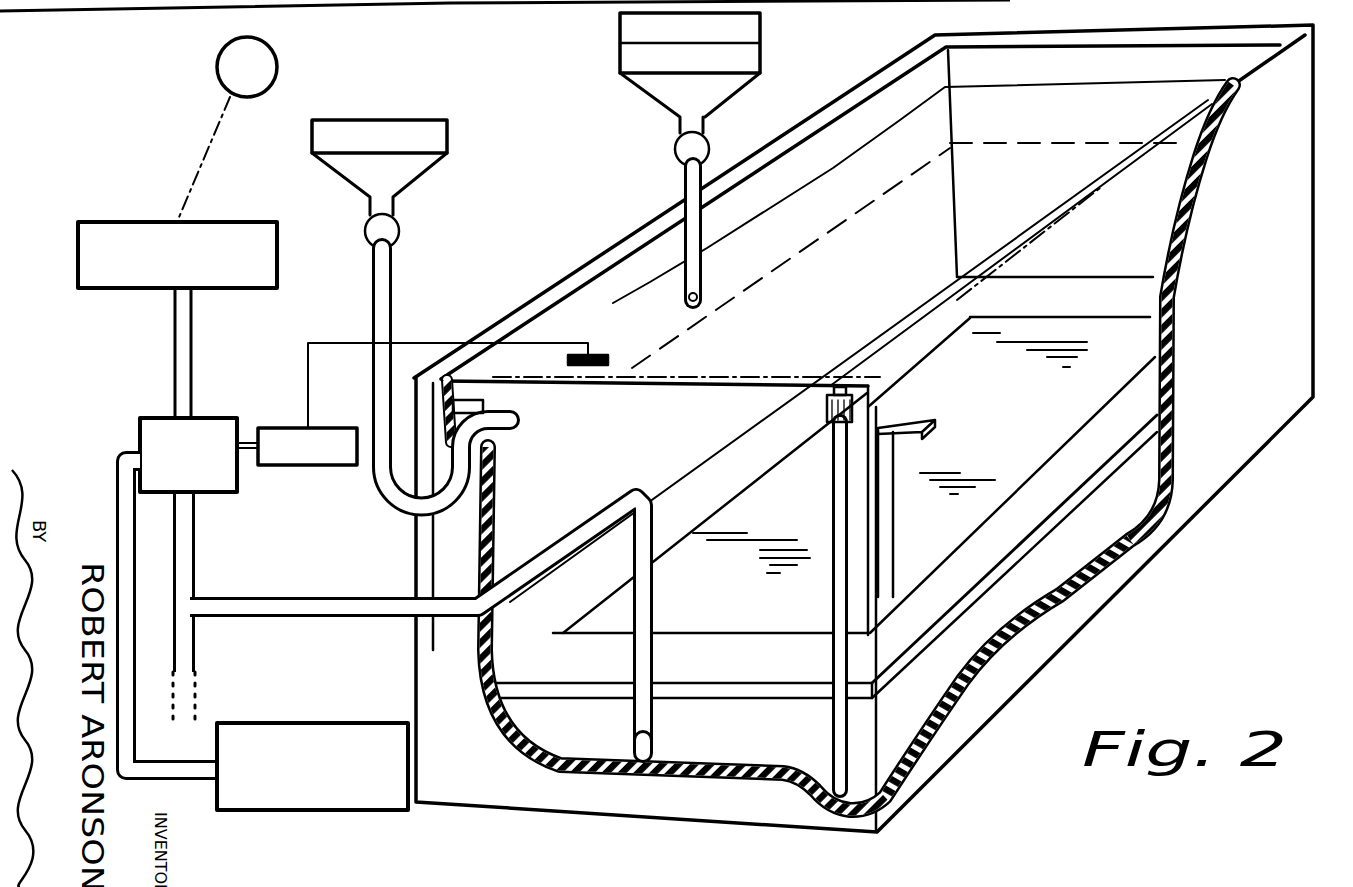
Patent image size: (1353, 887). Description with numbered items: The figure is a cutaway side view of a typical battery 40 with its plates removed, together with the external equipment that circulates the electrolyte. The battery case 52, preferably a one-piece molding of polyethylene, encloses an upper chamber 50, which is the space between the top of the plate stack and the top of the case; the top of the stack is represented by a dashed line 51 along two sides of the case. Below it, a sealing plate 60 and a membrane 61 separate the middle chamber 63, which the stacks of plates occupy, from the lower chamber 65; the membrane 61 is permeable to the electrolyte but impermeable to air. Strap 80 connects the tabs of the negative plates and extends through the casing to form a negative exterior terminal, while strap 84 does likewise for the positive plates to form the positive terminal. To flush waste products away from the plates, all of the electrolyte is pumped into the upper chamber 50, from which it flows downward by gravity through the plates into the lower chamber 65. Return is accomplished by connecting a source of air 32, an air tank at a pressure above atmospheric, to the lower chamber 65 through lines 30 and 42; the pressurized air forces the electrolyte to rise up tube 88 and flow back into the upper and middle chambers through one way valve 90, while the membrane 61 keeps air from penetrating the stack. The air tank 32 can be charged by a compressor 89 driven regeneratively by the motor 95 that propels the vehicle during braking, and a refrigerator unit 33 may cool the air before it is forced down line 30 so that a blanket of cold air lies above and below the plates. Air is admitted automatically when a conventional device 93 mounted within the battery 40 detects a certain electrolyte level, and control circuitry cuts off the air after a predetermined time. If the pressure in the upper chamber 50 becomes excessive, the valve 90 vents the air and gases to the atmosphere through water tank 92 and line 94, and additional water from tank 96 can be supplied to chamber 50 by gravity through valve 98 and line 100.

The line 30 is at (190, 562).
The air tank 32 is at (203, 420).
The refrigerator unit 33 is at (287, 795).
The battery 40 is at (1177, 554).
The line 42 is at (278, 601).
The upper chamber 50 is at (658, 268).
The dashed line 51 is at (829, 229).
The battery case 52 is at (1295, 208).
The sealing plate 60 is at (594, 686).
The membrane 61 is at (1040, 412).
The middle chamber 63 is at (993, 207).
The lower chamber 65 is at (737, 745).
The strap 80 is at (890, 594).
The strap 84 is at (500, 405).
The tube 88 is at (843, 493).
The compressor 89 is at (80, 257).
The one way valve 90 is at (870, 406).
The water tank 92 is at (453, 138).
The conventional device 93 is at (600, 355).
The line 94 is at (392, 297).
The motor 95 is at (217, 63).
The water tank 96 is at (737, 97).
The valve 98 is at (710, 148).
The line 100 is at (703, 228).